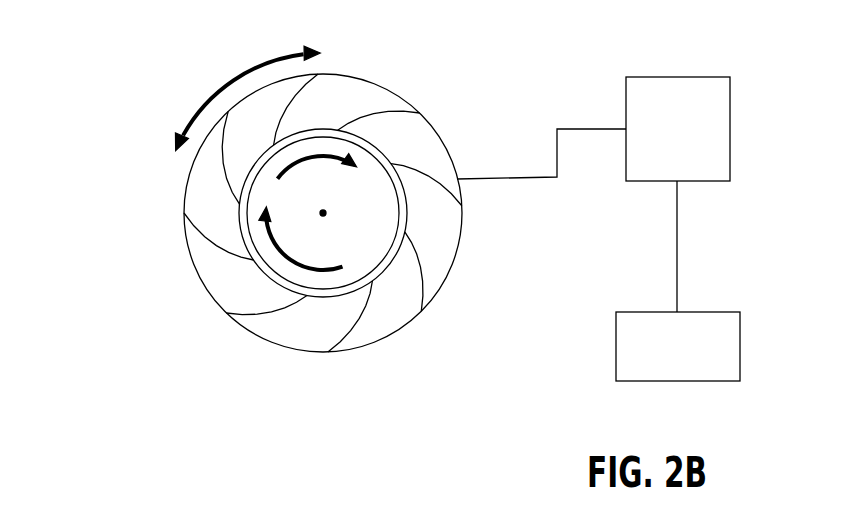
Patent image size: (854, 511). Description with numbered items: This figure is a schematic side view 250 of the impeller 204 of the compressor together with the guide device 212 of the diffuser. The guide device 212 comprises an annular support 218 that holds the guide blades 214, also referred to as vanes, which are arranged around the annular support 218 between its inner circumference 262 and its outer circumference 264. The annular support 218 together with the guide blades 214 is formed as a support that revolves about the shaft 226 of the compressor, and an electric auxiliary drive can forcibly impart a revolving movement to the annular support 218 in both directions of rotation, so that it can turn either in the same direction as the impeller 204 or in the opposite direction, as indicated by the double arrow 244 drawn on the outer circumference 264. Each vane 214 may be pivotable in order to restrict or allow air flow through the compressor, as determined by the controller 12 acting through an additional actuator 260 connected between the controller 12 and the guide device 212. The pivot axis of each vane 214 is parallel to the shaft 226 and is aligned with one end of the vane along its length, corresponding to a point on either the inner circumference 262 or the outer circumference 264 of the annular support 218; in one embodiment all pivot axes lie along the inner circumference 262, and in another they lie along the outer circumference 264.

The controller 12 is at (678, 346).
The impeller 204 is at (308, 212).
The guide device 212 is at (480, 107).
The guide blades 214 is at (425, 270).
The annular support 218 is at (358, 100).
The shaft 226 is at (323, 213).
The double arrow 244 is at (212, 102).
The side view 250 is at (142, 305).
The additional actuator 260 is at (678, 194).
The inner circumference 262 is at (376, 279).
The outer circumference 264 is at (418, 316).